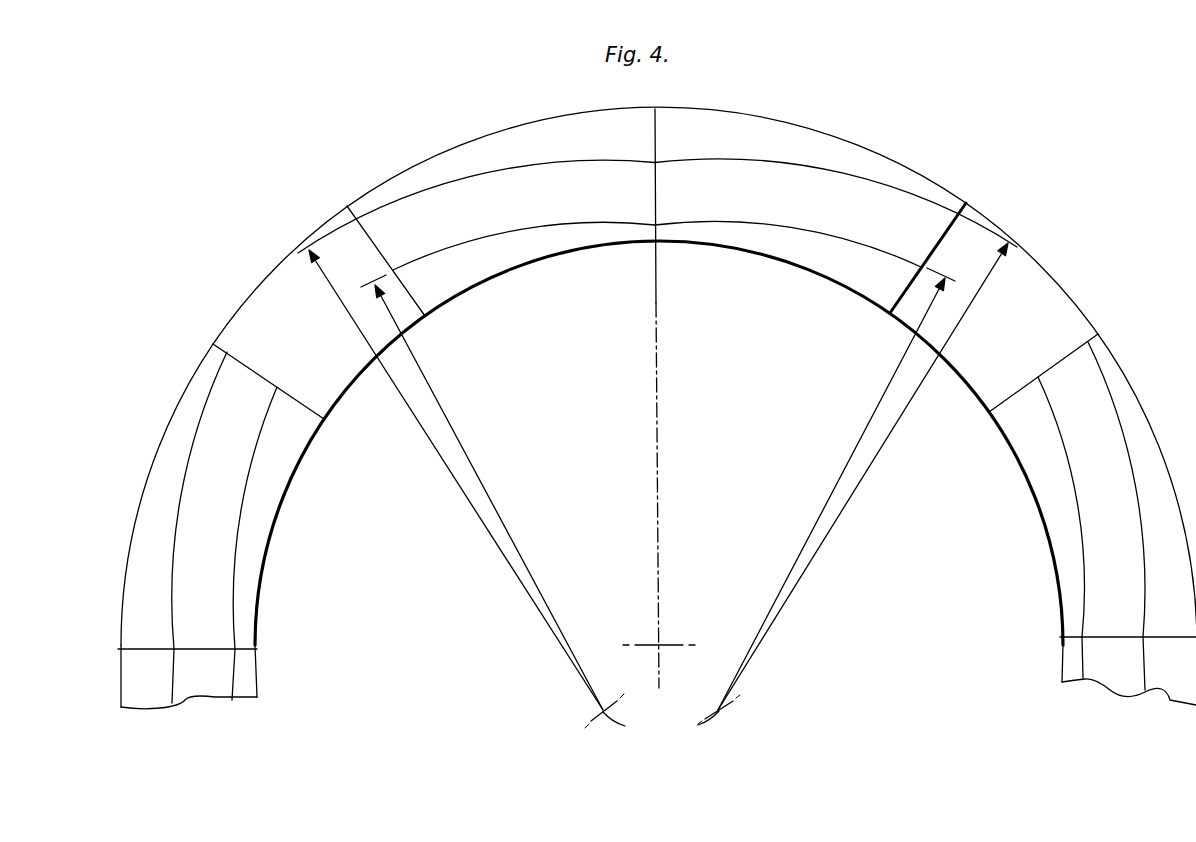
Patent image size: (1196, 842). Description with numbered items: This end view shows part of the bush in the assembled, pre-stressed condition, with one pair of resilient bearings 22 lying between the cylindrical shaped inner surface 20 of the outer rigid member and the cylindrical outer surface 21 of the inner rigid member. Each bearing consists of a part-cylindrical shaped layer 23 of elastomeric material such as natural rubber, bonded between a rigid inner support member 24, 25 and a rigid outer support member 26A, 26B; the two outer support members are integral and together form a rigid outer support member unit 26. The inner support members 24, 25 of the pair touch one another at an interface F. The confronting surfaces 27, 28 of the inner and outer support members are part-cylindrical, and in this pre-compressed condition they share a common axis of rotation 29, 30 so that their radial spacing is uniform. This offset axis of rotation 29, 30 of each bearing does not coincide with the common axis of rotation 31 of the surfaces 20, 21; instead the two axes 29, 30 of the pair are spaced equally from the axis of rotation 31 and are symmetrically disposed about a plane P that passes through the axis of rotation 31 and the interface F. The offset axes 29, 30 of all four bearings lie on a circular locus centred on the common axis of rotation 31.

The cylindrical shaped inner surface 20 is at (265, 280).
The cylindrical outer surface 21 is at (345, 389).
The resilient bearings 22 is at (422, 158).
The part-cylindrical shaped layers 23 is at (397, 217).
The rigid inner support member 24 is at (495, 263).
The rigid inner support member 25 is at (262, 538).
The rigid outer support member unit 26 is at (823, 128).
The rigid outer support member 26A is at (609, 150).
The rigid outer support member 26B is at (756, 150).
The confronting surface 27 is at (579, 226).
The confronting surface 28 is at (538, 167).
The common axis of rotation 29 is at (602, 713).
The common axis of rotation 30 is at (720, 711).
The common axis of rotation 31 is at (661, 642).
The interface F is at (661, 241).
The plane P is at (660, 412).